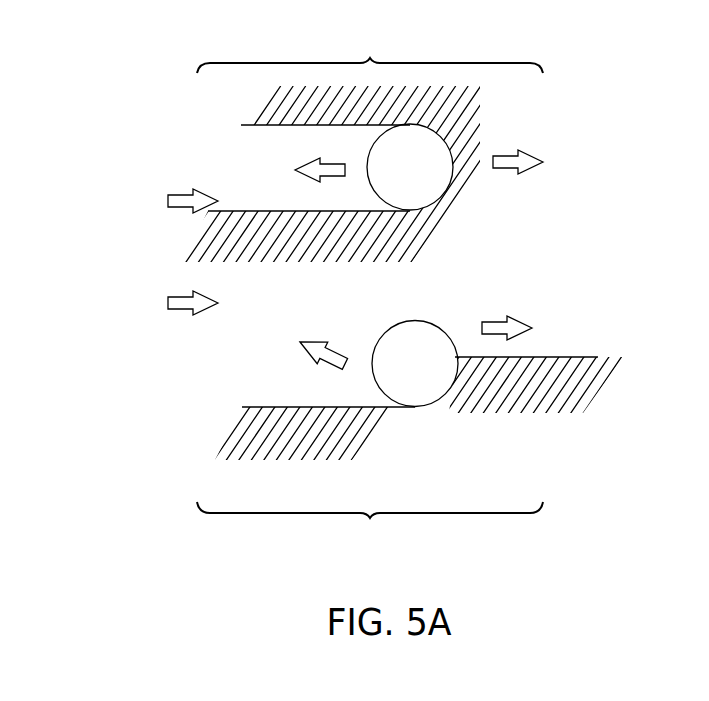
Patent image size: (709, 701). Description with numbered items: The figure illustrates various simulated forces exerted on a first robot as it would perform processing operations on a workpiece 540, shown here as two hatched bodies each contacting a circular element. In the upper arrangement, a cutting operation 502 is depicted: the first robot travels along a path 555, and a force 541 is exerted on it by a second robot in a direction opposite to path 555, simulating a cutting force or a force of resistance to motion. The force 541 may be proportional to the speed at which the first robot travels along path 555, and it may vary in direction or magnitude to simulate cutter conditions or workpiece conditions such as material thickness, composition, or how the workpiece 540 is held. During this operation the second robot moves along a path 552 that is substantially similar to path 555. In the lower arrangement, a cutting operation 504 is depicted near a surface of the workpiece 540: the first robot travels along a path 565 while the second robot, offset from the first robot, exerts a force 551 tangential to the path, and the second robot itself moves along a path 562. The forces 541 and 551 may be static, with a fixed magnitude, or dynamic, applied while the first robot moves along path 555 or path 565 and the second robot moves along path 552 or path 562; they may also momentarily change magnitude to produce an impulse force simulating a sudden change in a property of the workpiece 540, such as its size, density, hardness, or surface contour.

The workpiece 540 is at (370, 289).
The cutting operation 502 is at (607, 95).
The cutting operation 504 is at (634, 285).
The force 541 is at (295, 170).
The force 551 is at (300, 342).
The path 552 is at (168, 201).
The path 562 is at (168, 303).
The path 555 is at (543, 162).
The path 565 is at (532, 328).